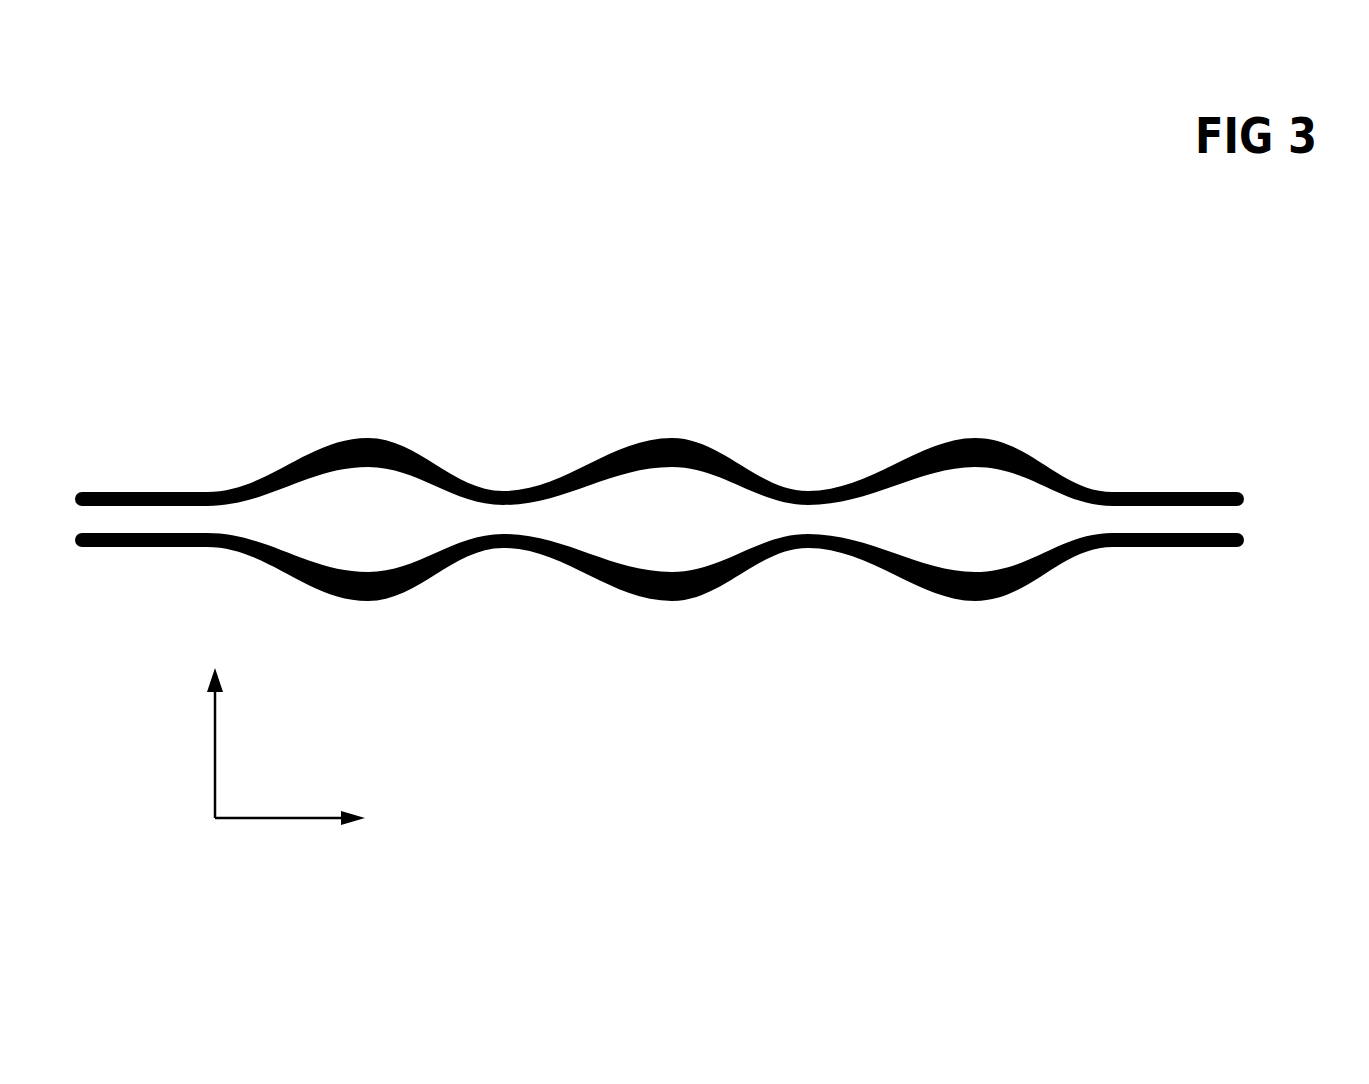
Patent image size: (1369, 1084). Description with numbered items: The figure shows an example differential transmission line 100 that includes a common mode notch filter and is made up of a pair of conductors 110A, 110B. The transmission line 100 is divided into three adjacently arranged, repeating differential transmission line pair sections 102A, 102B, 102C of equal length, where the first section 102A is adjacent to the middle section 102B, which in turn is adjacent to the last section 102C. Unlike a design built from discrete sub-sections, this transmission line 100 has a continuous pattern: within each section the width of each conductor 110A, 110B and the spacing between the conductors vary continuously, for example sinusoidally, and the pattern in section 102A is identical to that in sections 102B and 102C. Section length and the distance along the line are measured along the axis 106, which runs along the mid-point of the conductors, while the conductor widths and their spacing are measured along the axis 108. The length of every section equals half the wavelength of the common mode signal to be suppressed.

The differential transmission line 100 is at (690, 517).
The first differential transmission line pair section 102A is at (518, 447).
The middle differential transmission line pair section 102B is at (820, 447).
The last differential transmission line pair section 102C is at (1118, 447).
The axis 106 is at (290, 818).
The axis 108 is at (215, 737).
The conductor 110A is at (114, 491).
The conductor 110B is at (115, 547).